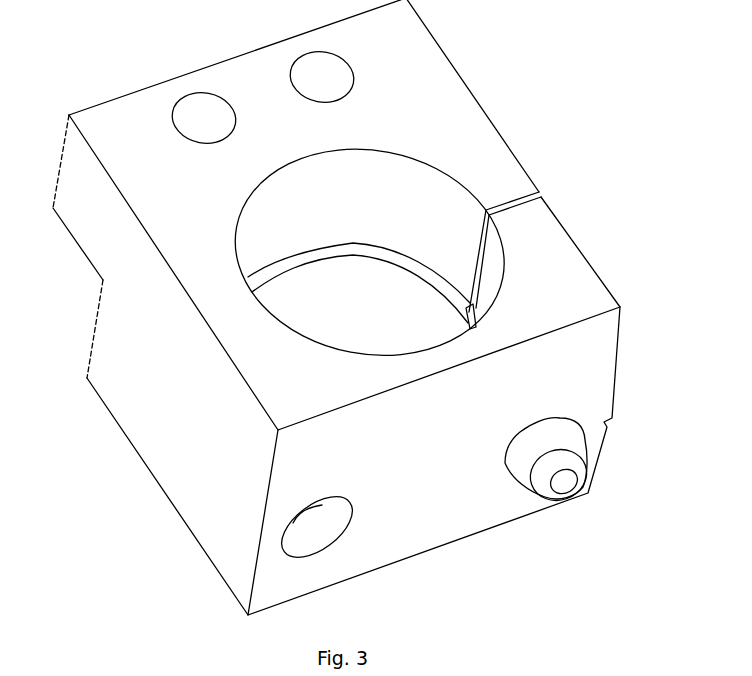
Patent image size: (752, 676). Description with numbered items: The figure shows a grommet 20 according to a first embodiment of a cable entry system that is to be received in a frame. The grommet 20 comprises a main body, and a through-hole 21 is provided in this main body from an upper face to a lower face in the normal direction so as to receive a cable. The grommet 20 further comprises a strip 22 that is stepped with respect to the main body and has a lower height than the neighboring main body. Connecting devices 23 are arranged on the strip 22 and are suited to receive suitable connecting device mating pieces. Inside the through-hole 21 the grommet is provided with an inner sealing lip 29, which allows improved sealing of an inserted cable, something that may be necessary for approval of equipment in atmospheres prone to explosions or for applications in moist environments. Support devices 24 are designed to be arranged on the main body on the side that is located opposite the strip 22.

The grommet 20 is at (545, 68).
The through-hole 21 is at (319, 332).
The strip 22 is at (102, 133).
The connecting devices 23 is at (324, 75).
The support devices 24 is at (362, 515).
The inner sealing lip 29 is at (325, 249).